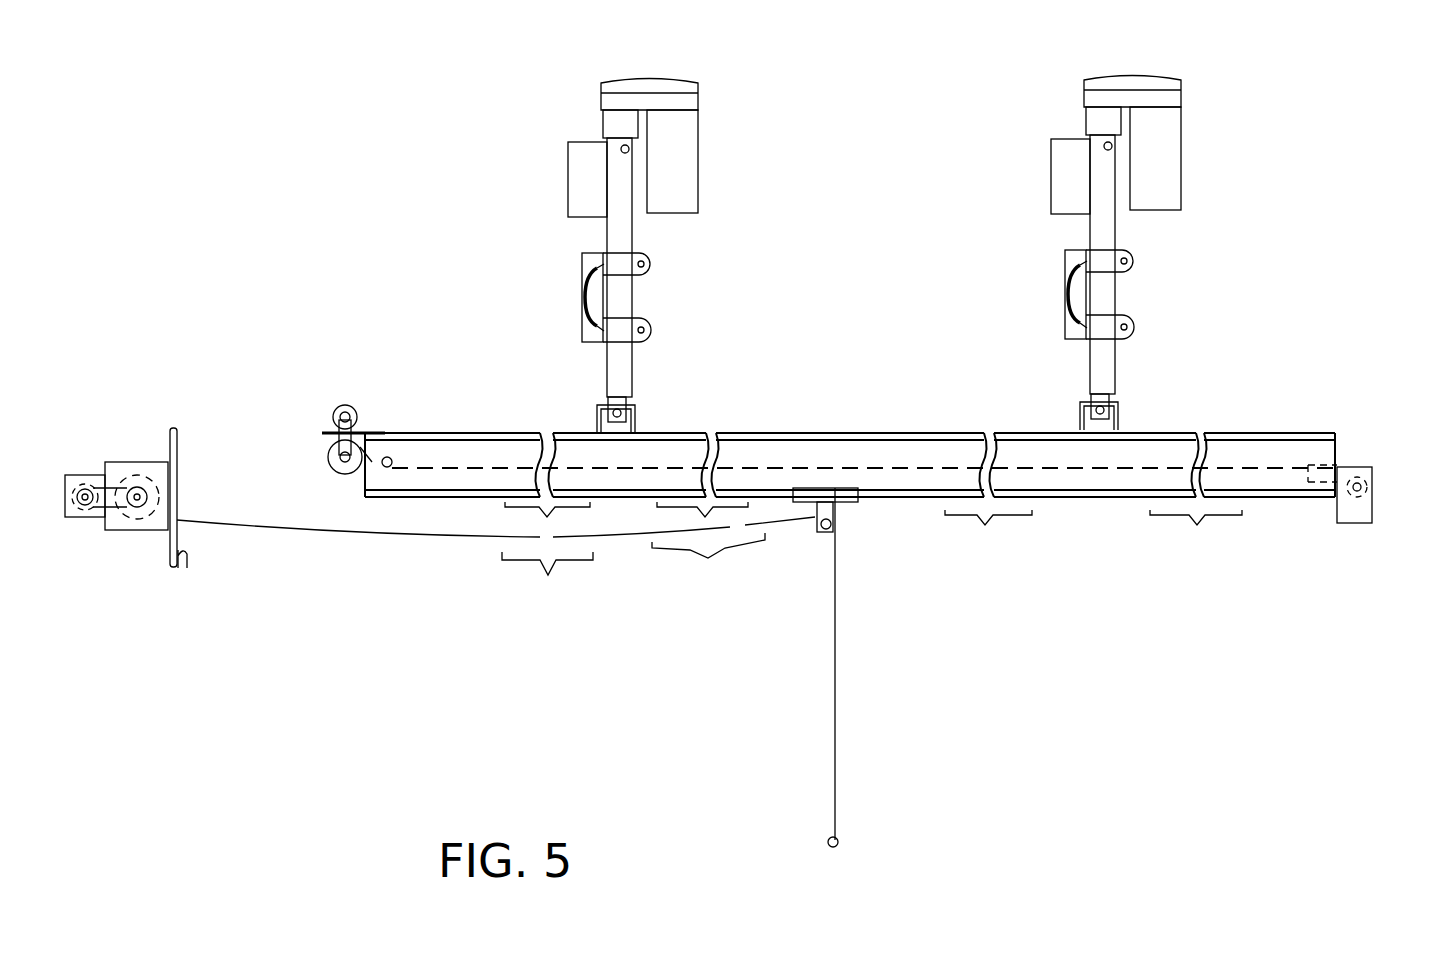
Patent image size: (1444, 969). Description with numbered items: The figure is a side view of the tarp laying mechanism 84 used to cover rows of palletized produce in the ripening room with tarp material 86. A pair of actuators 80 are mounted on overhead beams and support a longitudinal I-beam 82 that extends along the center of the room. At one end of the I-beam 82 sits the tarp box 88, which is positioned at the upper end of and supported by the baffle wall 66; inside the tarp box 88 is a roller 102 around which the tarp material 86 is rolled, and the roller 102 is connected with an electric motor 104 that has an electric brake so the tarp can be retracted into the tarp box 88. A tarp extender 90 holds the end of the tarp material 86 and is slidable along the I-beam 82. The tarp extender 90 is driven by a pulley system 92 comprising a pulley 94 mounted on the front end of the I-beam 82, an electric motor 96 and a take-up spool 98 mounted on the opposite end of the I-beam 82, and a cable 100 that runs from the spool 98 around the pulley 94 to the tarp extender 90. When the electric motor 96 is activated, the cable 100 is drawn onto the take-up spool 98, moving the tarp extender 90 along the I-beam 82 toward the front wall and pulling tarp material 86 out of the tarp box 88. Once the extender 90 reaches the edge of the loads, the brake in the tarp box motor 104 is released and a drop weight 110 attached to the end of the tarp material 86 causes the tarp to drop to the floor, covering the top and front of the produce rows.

The baffle wall 66 is at (186, 520).
The actuators 80 is at (703, 152).
The I-beam 82 is at (1268, 447).
The tarp laying mechanism 84 is at (1212, 352).
The tarp material 86 is at (838, 700).
The tarp box 88 is at (128, 462).
The tarp extender 90 is at (840, 524).
The pulley system 92 is at (1378, 500).
The pulley 94 is at (1368, 484).
The electric motor 96 is at (360, 421).
The take-up spool 98 is at (350, 474).
The cable 100 is at (661, 448).
The roller 102 is at (133, 506).
The electric motor 104 is at (73, 520).
The drop weight 110 is at (841, 841).